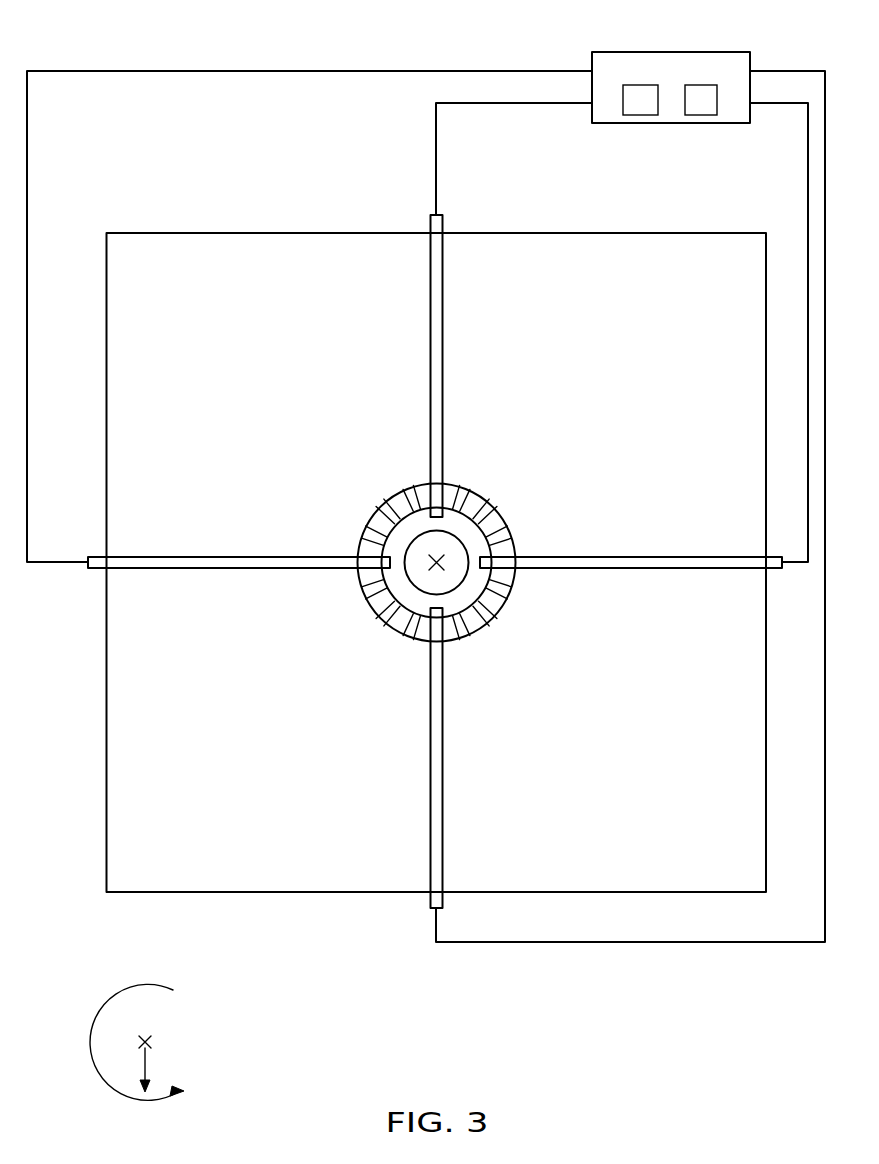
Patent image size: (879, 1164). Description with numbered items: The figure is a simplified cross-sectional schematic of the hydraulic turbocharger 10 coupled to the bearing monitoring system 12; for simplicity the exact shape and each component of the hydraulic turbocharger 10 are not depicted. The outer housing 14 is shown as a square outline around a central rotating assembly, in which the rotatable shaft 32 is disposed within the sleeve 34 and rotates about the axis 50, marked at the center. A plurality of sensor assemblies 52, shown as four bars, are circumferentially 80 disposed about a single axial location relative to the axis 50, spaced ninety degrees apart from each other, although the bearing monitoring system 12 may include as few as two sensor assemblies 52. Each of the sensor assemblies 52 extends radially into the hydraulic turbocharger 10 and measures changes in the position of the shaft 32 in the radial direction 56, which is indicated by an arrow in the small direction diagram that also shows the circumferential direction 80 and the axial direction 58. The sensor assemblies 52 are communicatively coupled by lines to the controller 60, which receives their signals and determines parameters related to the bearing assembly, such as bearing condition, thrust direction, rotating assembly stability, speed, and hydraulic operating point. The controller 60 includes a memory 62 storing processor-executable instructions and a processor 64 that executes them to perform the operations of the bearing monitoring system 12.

The hydraulic turbocharger 10 is at (134, 208).
The bearing monitoring system 12 is at (677, 208).
The outer housing 14 is at (180, 893).
The rotatable shaft 32 is at (457, 587).
The sleeve 34 is at (483, 627).
The axis 50 is at (447, 558).
The sensor assemblies 52 is at (430, 222).
The radial direction 56 is at (147, 1062).
The axial direction 58 is at (150, 1038).
The controller 60 is at (710, 52).
The memory 62 is at (717, 104).
The processor 64 is at (656, 104).
The circumferential direction 80 is at (87, 1040).